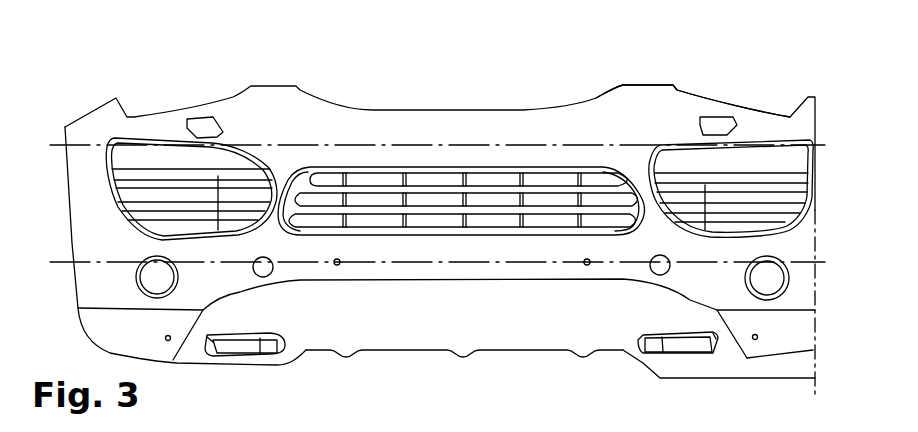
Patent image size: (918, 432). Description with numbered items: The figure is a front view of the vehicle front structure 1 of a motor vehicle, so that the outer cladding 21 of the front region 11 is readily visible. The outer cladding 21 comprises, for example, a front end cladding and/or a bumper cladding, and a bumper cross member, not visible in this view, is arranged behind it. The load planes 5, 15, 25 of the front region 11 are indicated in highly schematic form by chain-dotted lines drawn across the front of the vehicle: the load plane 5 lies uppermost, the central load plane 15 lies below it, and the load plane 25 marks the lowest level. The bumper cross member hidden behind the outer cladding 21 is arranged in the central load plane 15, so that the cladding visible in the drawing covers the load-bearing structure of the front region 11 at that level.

The vehicle front structure 1 is at (107, 62).
The front region 11 is at (190, 68).
The load plane 5 is at (323, 143).
The central load plane 15 is at (442, 258).
The outer cladding 21 is at (642, 97).
The load plane 25 is at (560, 317).